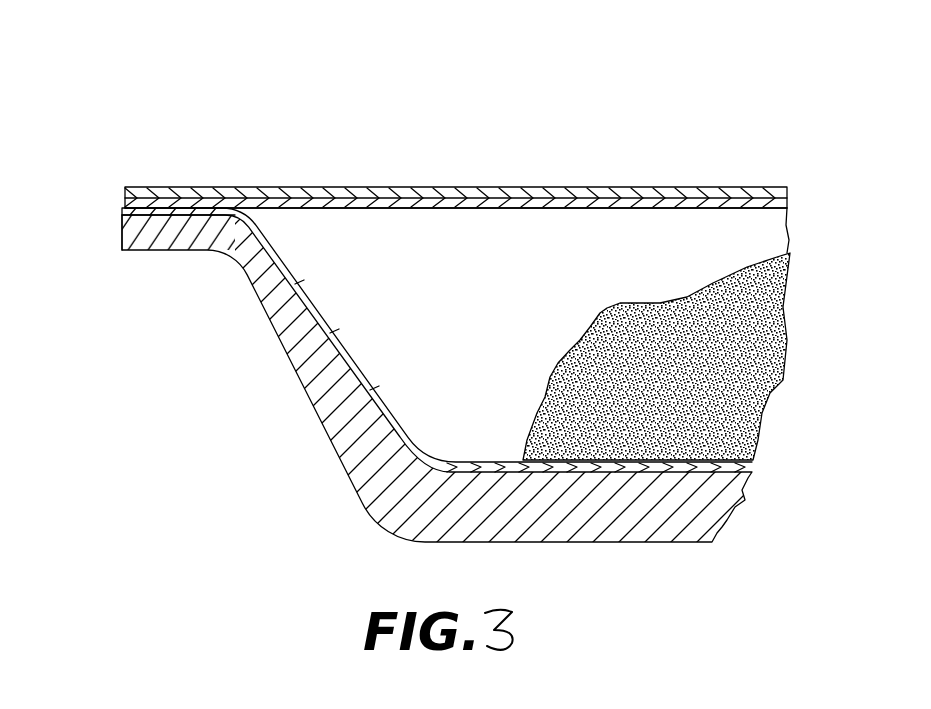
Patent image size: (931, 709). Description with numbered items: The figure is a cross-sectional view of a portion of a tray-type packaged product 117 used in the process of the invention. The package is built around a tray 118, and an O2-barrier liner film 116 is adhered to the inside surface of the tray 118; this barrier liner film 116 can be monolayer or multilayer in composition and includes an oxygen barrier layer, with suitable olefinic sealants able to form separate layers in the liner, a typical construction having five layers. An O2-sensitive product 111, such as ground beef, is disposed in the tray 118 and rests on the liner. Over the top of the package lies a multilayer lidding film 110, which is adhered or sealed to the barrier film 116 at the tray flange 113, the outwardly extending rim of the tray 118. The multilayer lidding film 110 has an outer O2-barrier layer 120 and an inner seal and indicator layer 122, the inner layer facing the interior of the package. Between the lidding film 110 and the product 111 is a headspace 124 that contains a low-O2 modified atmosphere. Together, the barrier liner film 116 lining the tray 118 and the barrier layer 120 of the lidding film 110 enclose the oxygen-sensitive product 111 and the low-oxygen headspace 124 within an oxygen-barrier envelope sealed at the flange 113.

The multilayer lidding film 110 is at (380, 182).
The O2-sensitive product 111 is at (570, 347).
The tray flange 113 is at (185, 276).
The O2-barrier liner film 116 is at (343, 342).
The packaged product 117 is at (752, 84).
The tray 118 is at (690, 558).
The outer O2-barrier layer 120 is at (640, 190).
The inner seal and indicator layer 122 is at (673, 200).
The headspace 124 is at (507, 237).